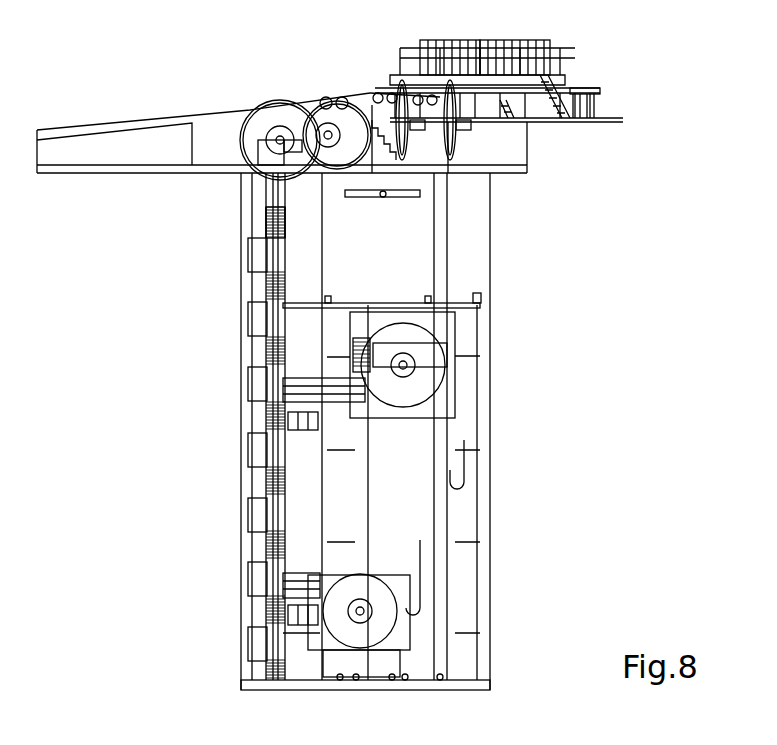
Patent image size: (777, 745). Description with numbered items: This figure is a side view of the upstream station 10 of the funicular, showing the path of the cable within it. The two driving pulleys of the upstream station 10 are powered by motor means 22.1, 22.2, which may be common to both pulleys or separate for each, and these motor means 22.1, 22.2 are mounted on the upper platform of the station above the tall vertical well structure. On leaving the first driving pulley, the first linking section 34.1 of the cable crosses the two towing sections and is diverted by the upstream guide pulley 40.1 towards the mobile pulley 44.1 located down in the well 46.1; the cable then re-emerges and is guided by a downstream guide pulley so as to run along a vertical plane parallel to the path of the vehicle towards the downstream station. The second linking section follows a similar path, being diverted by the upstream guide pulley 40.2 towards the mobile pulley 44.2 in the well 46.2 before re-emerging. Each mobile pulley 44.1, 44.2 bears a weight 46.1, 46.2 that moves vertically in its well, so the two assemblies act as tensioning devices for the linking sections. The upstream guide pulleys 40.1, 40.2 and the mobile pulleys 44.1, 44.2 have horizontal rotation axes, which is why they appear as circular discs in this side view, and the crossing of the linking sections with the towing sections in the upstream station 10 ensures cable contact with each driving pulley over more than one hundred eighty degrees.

The upstream station 10 is at (566, 174).
The motor means 22.1 is at (517, 55).
The motor means 22.2 is at (440, 45).
The first linking section 34.1 is at (320, 228).
The upstream guide pulley 40.1 is at (263, 120).
The upstream guide pulley 40.2 is at (320, 102).
The mobile pulley 44.1 is at (385, 636).
The mobile pulley 44.2 is at (425, 383).
The weight 46.1 is at (390, 574).
The weight 46.2 is at (440, 320).